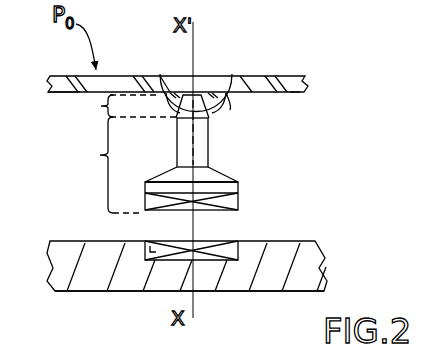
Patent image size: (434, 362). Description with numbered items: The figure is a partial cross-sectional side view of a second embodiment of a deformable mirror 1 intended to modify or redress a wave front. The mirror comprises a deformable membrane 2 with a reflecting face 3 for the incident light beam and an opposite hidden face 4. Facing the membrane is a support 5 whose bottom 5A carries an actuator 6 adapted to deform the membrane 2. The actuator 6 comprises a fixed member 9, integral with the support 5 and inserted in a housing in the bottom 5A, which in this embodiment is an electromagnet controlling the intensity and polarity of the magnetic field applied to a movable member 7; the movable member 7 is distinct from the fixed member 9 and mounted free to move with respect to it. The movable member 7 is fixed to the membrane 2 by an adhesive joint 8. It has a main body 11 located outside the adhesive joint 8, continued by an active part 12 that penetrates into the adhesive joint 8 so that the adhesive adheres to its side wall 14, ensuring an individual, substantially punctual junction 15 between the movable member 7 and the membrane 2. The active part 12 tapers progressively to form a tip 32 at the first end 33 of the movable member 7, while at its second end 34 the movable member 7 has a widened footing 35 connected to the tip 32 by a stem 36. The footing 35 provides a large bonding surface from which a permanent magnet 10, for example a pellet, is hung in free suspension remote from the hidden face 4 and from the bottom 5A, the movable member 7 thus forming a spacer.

The deformable mirror 1 is at (286, 62).
The deformable membrane 2 is at (300, 79).
The reflecting face 3 is at (253, 76).
The hidden face 4 is at (290, 92).
The support 5 is at (300, 266).
The bottom of the support 5A is at (249, 282).
The actuator 6 is at (258, 222).
The movable member 7 is at (211, 148).
The adhesive joint 8 is at (205, 111).
The fixed member 9 is at (152, 249).
The permanent magnet 10 is at (239, 204).
The main body 11 is at (100, 155).
The active part 12 is at (101, 106).
The side wall 14 is at (166, 108).
The junction 15 is at (236, 109).
The tip 32 is at (230, 110).
The first end 33 is at (59, 103).
The second end 34 is at (86, 209).
The widened footing 35 is at (145, 184).
The stem 36 is at (187, 143).